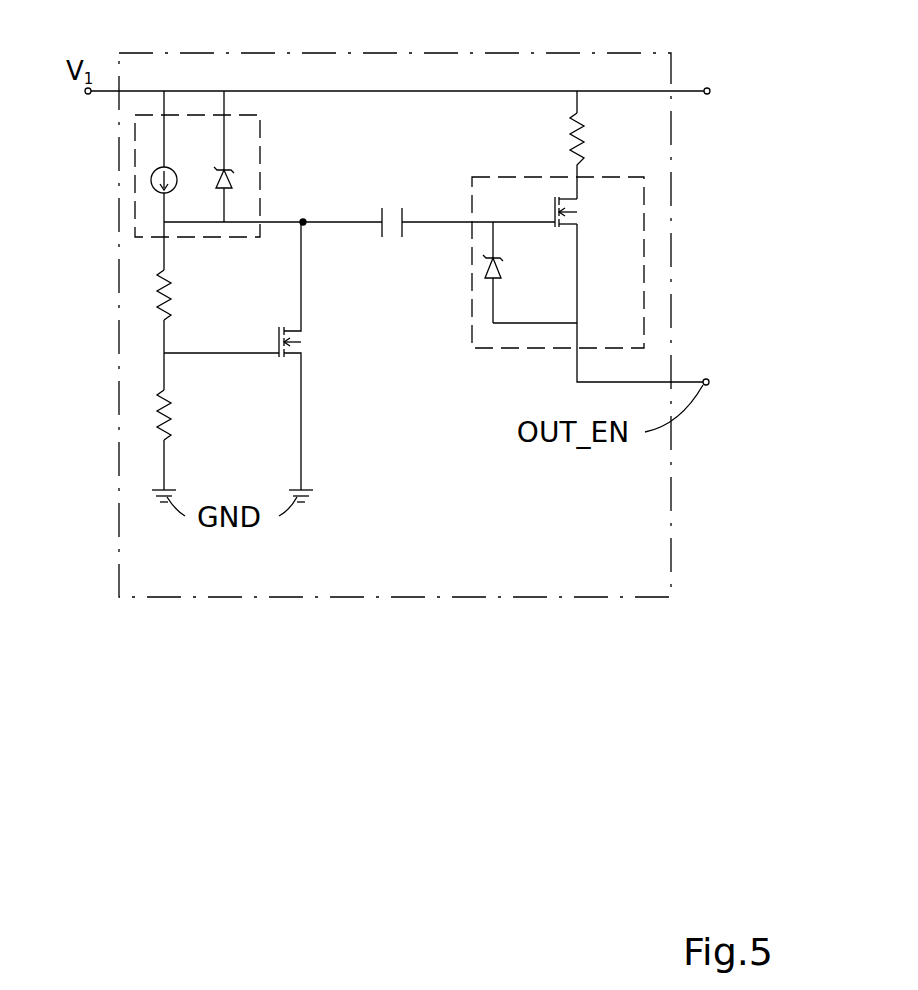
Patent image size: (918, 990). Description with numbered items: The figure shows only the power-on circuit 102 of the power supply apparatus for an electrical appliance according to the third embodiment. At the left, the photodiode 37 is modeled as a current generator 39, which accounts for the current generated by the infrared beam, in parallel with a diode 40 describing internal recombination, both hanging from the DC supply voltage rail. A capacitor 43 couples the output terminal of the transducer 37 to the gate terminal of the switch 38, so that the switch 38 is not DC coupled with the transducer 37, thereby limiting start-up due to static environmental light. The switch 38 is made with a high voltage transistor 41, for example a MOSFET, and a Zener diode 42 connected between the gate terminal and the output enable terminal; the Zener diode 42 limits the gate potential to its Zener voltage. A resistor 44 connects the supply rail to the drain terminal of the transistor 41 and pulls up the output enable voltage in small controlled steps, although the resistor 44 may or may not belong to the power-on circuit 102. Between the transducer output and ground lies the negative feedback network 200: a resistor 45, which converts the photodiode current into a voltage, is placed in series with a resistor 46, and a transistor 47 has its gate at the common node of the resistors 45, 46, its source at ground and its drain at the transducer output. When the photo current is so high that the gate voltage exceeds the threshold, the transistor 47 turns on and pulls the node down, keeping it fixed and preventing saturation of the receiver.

The power-on circuit 102 is at (465, 53).
The photodiode 37 is at (245, 112).
The switch 38 is at (485, 177).
The current generator 39 is at (170, 168).
The diode 40 is at (230, 185).
The high voltage transistor 41 is at (578, 212).
The Zener diode 42 is at (500, 270).
The capacitor 43 is at (403, 236).
The resistor 44 is at (587, 145).
The resistor 45 is at (172, 292).
The resistor 46 is at (172, 410).
The transistor 47 is at (302, 340).
The negative feedback network 200 is at (145, 371).